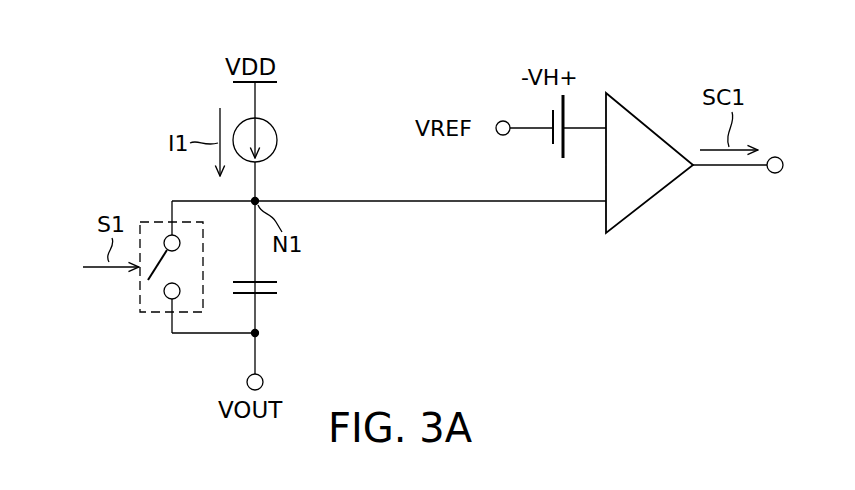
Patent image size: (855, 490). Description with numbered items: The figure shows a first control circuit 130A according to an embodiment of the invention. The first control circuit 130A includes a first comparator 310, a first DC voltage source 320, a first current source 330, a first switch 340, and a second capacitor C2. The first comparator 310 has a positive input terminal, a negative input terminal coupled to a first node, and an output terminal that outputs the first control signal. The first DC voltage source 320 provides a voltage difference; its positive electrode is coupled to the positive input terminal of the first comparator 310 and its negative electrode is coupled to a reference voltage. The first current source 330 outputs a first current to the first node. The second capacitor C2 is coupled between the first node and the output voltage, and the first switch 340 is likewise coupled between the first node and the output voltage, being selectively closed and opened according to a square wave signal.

The first control circuit 130A is at (88, 33).
The first comparator 310 is at (606, 93).
The first DC voltage source 320 is at (557, 148).
The first current source 330 is at (279, 140).
The first switch 340 is at (139, 309).
The second capacitor C2 is at (278, 291).